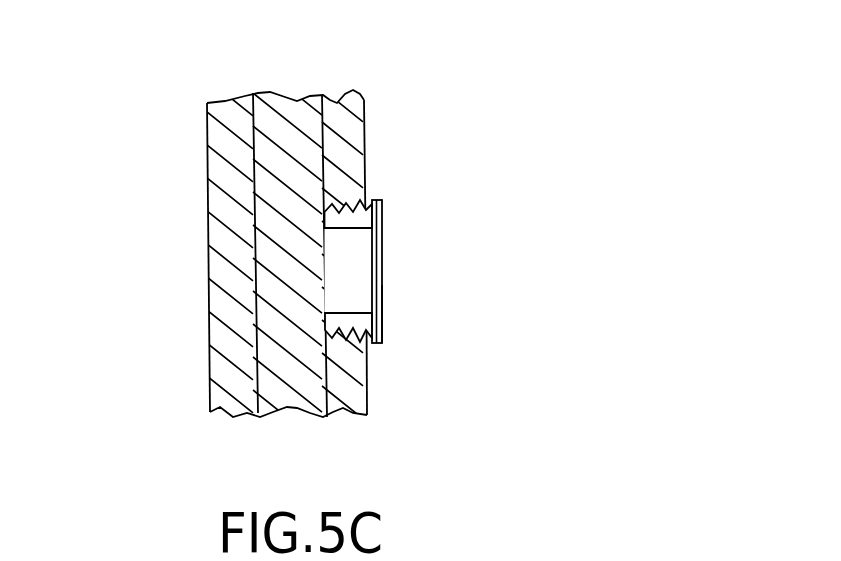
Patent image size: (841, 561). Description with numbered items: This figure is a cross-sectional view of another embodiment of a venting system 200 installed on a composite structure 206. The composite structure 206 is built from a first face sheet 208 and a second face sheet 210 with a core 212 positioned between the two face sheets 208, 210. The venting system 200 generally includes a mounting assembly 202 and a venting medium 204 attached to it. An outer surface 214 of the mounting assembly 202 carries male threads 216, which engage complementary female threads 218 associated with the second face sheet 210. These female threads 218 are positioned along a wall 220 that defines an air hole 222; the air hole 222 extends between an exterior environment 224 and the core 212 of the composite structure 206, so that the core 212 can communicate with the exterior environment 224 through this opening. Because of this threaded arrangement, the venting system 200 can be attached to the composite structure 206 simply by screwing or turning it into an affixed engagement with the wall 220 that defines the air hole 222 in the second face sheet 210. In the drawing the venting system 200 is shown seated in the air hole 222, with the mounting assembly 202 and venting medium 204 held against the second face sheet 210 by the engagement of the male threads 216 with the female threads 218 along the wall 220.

The venting system 200 is at (412, 268).
The mounting assembly 202 is at (372, 200).
The venting medium 204 is at (382, 248).
The composite structure 206 is at (186, 166).
The first face sheet 208 is at (228, 100).
The second face sheet 210 is at (340, 102).
The core 212 is at (297, 103).
The outer surface 214 is at (350, 208).
The male threads 216 is at (353, 345).
The female threads 218 is at (382, 295).
The wall 220 is at (326, 228).
The air hole 222 is at (340, 278).
The exterior environment 224 is at (590, 180).